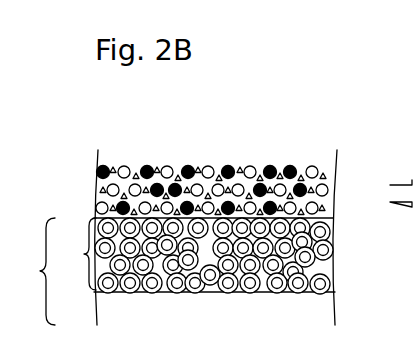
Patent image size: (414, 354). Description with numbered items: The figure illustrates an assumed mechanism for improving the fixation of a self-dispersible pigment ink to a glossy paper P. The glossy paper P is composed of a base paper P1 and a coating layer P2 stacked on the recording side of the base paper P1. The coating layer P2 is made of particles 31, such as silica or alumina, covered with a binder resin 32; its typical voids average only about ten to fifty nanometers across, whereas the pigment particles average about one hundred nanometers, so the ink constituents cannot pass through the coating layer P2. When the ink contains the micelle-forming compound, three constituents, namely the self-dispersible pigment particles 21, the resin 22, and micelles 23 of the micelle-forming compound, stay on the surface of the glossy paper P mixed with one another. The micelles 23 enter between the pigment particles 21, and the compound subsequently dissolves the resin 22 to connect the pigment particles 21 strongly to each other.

The self-dispersible pigment particles 21 is at (178, 128).
The resin 22 is at (232, 137).
The micelles 23 is at (298, 127).
The particles 31 is at (323, 266).
The binder resin 32 is at (327, 288).
The glossy paper P is at (36, 271).
The base paper P1 is at (118, 313).
The coating layer P2 is at (74, 254).